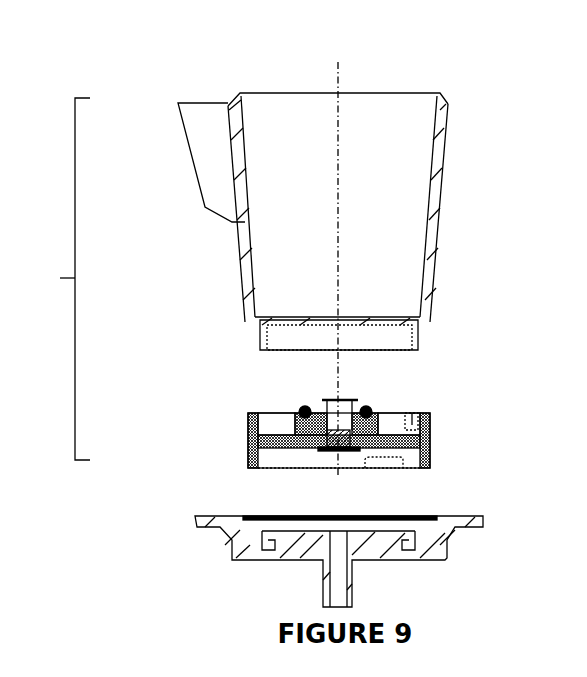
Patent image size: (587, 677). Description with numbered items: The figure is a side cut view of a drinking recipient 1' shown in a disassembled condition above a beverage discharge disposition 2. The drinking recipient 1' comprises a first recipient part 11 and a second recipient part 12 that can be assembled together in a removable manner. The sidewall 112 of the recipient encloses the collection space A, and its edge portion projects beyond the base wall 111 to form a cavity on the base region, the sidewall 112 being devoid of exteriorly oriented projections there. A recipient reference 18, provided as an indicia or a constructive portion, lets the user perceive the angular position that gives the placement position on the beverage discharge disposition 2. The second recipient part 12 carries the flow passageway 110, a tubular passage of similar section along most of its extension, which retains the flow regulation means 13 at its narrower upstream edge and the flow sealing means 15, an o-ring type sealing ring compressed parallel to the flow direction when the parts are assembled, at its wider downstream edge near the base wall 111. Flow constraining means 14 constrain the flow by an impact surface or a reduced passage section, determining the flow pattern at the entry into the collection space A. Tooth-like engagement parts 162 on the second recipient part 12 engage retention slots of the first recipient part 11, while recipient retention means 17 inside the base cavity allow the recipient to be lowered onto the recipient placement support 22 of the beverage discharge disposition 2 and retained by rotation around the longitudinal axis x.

The drinking recipient 1' is at (55, 279).
The first recipient part 11 is at (317, 271).
The recipient reference 18 is at (191, 162).
The sidewall 112 is at (364, 274).
The flow passageway 110 is at (333, 404).
The collection space A is at (385, 152).
The longitudinal axis x is at (323, 268).
The second recipient part 12 is at (307, 422).
The base wall 111 is at (265, 397).
The flow sealing means 15 is at (266, 428).
The flow constraining means 14 is at (352, 400).
The flow regulation means 13 is at (327, 453).
The engagement parts 162 is at (422, 407).
The recipient retention means 17 is at (373, 470).
The beverage discharge disposition 2 is at (338, 558).
The recipient placement support 22 is at (424, 569).